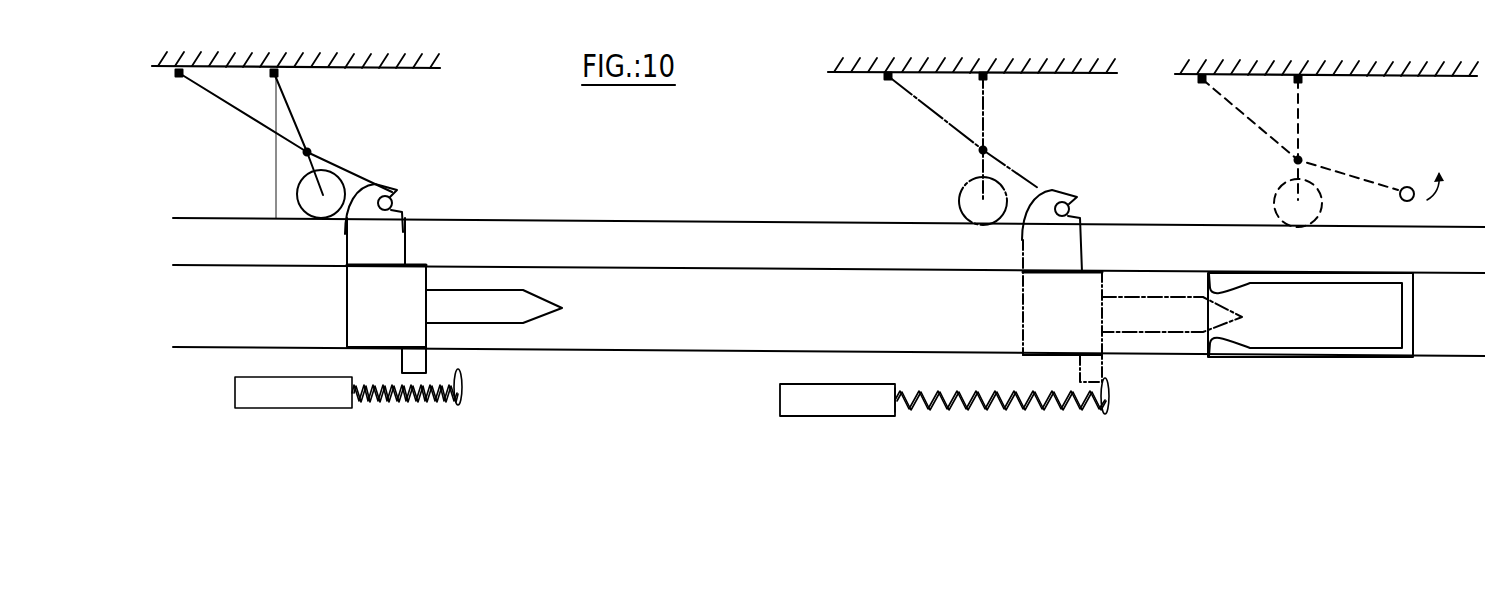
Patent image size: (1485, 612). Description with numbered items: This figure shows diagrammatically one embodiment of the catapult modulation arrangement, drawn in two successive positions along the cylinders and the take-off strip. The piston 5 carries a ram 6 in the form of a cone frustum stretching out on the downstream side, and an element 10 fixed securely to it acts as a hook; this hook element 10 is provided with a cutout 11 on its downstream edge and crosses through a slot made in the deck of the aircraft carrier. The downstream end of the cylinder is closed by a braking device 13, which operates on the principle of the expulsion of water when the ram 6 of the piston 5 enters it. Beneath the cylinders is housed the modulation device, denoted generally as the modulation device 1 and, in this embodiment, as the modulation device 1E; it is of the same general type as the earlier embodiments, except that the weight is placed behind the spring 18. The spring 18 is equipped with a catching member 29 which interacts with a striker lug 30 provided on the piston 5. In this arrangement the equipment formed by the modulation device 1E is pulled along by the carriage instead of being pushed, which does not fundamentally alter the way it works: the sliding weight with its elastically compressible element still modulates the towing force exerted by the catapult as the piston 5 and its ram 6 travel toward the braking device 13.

The modulation device 1 is at (795, 398).
The modulation device 1E is at (921, 392).
The piston 5 is at (1083, 287).
The ram 6 is at (1167, 310).
The hook element 10 is at (1072, 247).
The cutout 11 is at (1072, 200).
The braking device 13 is at (1387, 310).
The spring 18 is at (970, 403).
The catching member 29 is at (462, 390).
The striker lug 30 is at (417, 357).